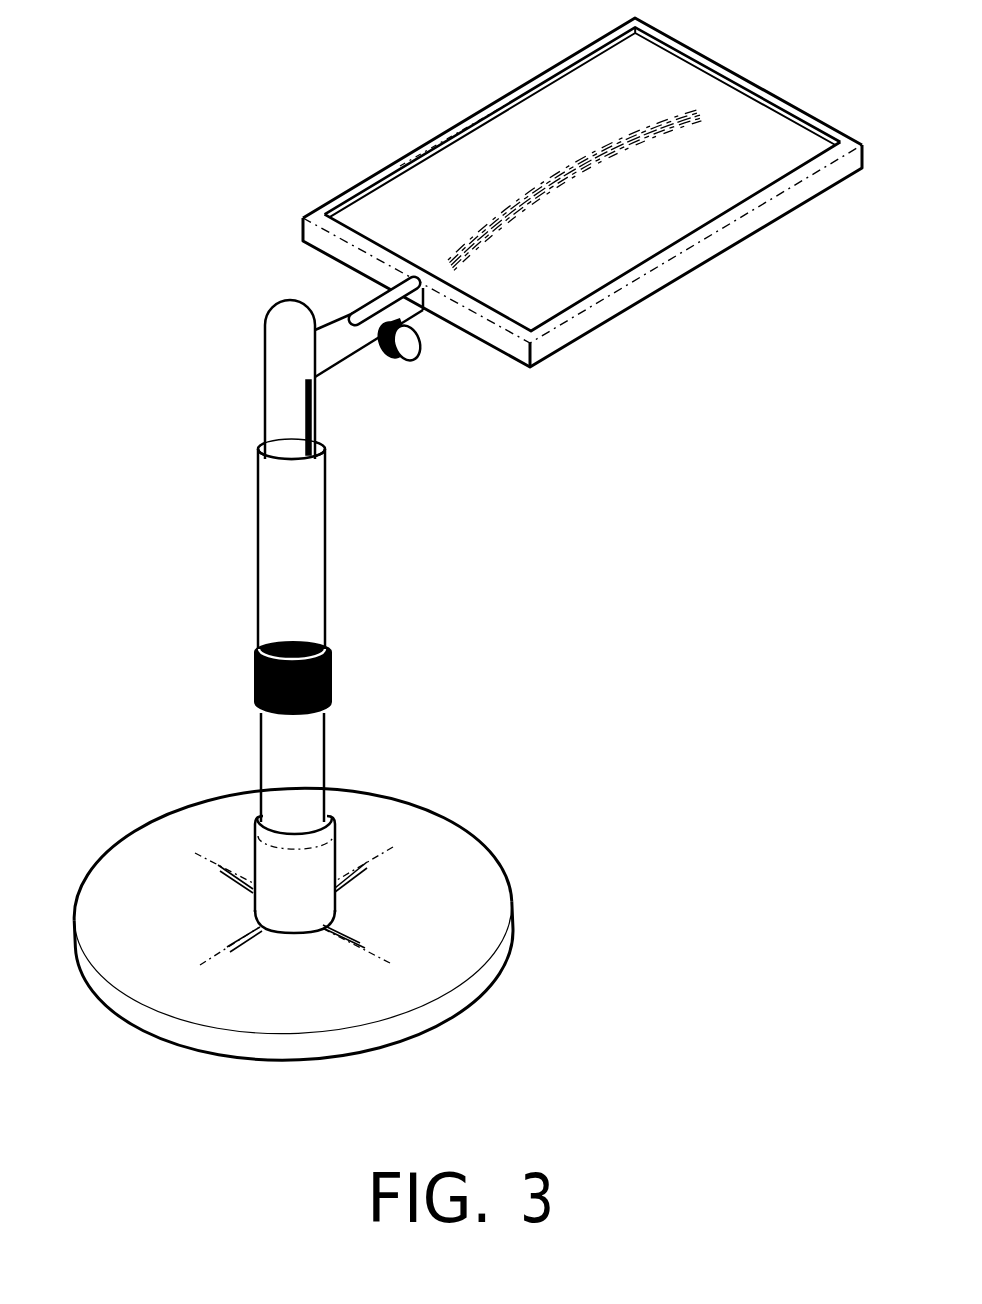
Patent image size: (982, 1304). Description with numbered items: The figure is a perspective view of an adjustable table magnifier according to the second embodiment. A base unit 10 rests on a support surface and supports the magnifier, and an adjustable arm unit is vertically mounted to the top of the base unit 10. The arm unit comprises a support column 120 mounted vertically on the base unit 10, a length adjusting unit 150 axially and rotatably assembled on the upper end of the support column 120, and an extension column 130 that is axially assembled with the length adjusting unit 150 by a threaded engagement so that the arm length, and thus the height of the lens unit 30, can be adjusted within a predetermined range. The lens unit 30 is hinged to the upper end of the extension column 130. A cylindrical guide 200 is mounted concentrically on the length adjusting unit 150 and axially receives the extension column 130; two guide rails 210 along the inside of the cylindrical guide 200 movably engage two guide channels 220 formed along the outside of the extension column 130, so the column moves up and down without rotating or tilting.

The base unit 10 is at (467, 905).
The lens unit 30 is at (642, 245).
The support column 120 is at (324, 757).
The extension column 130 is at (277, 403).
The length adjusting unit 150 is at (258, 682).
The cylindrical guide 200 is at (340, 545).
The guide rails 210 is at (327, 449).
The guide channels 220 is at (313, 407).